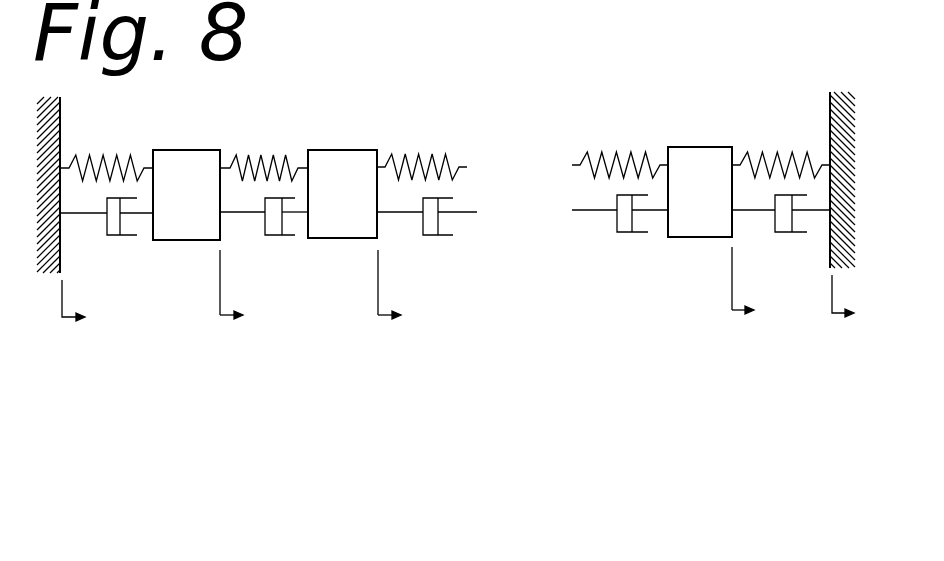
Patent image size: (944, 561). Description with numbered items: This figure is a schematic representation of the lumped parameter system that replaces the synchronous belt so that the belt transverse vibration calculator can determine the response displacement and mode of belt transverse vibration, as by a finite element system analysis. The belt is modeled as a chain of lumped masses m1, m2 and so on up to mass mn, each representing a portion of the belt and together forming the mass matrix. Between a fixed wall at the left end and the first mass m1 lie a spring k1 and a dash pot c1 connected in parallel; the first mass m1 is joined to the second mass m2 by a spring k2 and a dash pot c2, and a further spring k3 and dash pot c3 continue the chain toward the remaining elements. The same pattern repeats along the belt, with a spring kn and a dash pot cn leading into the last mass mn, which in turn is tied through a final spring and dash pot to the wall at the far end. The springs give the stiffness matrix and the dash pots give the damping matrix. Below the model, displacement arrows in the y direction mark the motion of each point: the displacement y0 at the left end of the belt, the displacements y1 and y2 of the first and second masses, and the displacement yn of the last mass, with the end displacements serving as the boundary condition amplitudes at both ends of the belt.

The spring k1 is at (106, 144).
The spring k2 is at (264, 144).
The spring k3 is at (422, 143).
The spring kn is at (620, 138).
The mass m1 is at (186, 232).
The mass m2 is at (343, 232).
The mass mn is at (700, 228).
The dash pot c1 is at (106, 240).
The dash pot c2 is at (264, 240).
The dash pot c3 is at (603, 239).
The dash pot cn is at (620, 239).
The displacement amplitude y0 is at (76, 324).
The displacement y1 is at (239, 339).
The displacement y2 is at (393, 339).
The displacement yn is at (748, 335).